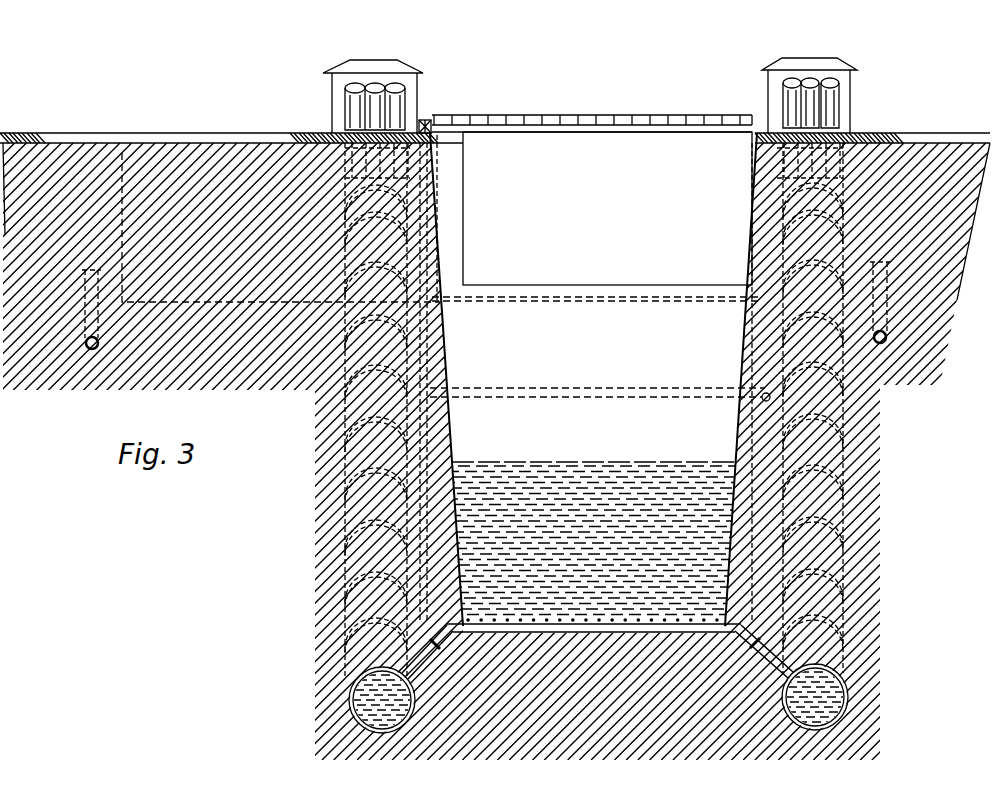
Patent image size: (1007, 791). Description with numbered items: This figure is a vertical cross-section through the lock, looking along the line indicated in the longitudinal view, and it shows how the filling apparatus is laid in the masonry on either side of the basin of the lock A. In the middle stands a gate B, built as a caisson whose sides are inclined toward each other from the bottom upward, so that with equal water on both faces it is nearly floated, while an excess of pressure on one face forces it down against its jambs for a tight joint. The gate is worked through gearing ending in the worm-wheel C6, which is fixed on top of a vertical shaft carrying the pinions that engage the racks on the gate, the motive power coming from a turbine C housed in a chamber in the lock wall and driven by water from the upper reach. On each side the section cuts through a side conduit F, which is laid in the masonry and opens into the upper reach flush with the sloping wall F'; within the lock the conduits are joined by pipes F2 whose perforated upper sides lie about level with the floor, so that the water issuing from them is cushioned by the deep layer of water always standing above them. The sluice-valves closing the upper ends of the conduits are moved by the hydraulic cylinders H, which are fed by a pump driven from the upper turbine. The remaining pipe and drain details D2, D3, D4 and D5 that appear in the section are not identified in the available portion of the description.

The basin of the lock A is at (595, 520).
The gate B is at (587, 128).
The turbine C is at (440, 283).
The worm-wheel C6 is at (427, 124).
The cross pipe D2 is at (600, 392).
The left drain pipe D3 is at (85, 343).
The right drain pipe D4 is at (887, 338).
The dashed conduit D5 is at (281, 227).
The side conduit F is at (594, 700).
The sloping wall F' is at (594, 410).
The pipe F2 is at (600, 633).
The hydraulic cylinder H is at (371, 67).